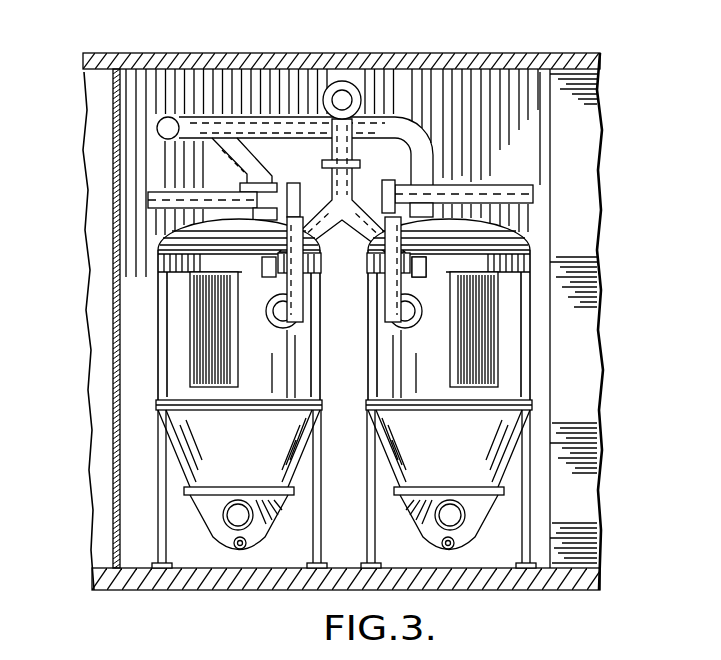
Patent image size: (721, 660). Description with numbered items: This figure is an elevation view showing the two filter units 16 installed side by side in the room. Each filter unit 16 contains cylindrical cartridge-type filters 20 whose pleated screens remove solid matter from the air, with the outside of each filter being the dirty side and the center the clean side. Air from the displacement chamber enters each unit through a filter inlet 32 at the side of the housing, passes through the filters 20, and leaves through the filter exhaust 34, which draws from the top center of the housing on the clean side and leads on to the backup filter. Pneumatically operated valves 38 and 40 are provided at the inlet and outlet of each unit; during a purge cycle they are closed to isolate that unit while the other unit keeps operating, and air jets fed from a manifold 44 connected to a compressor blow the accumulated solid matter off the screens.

The filter unit 16 is at (370, 358).
The cartridge-type filter 20 is at (202, 315).
The filter inlet 32 is at (318, 228).
The filter exhaust 34 is at (413, 117).
The pneumatic valve 38 is at (420, 262).
The pneumatic valve 40 is at (386, 184).
The manifold 44 is at (150, 198).